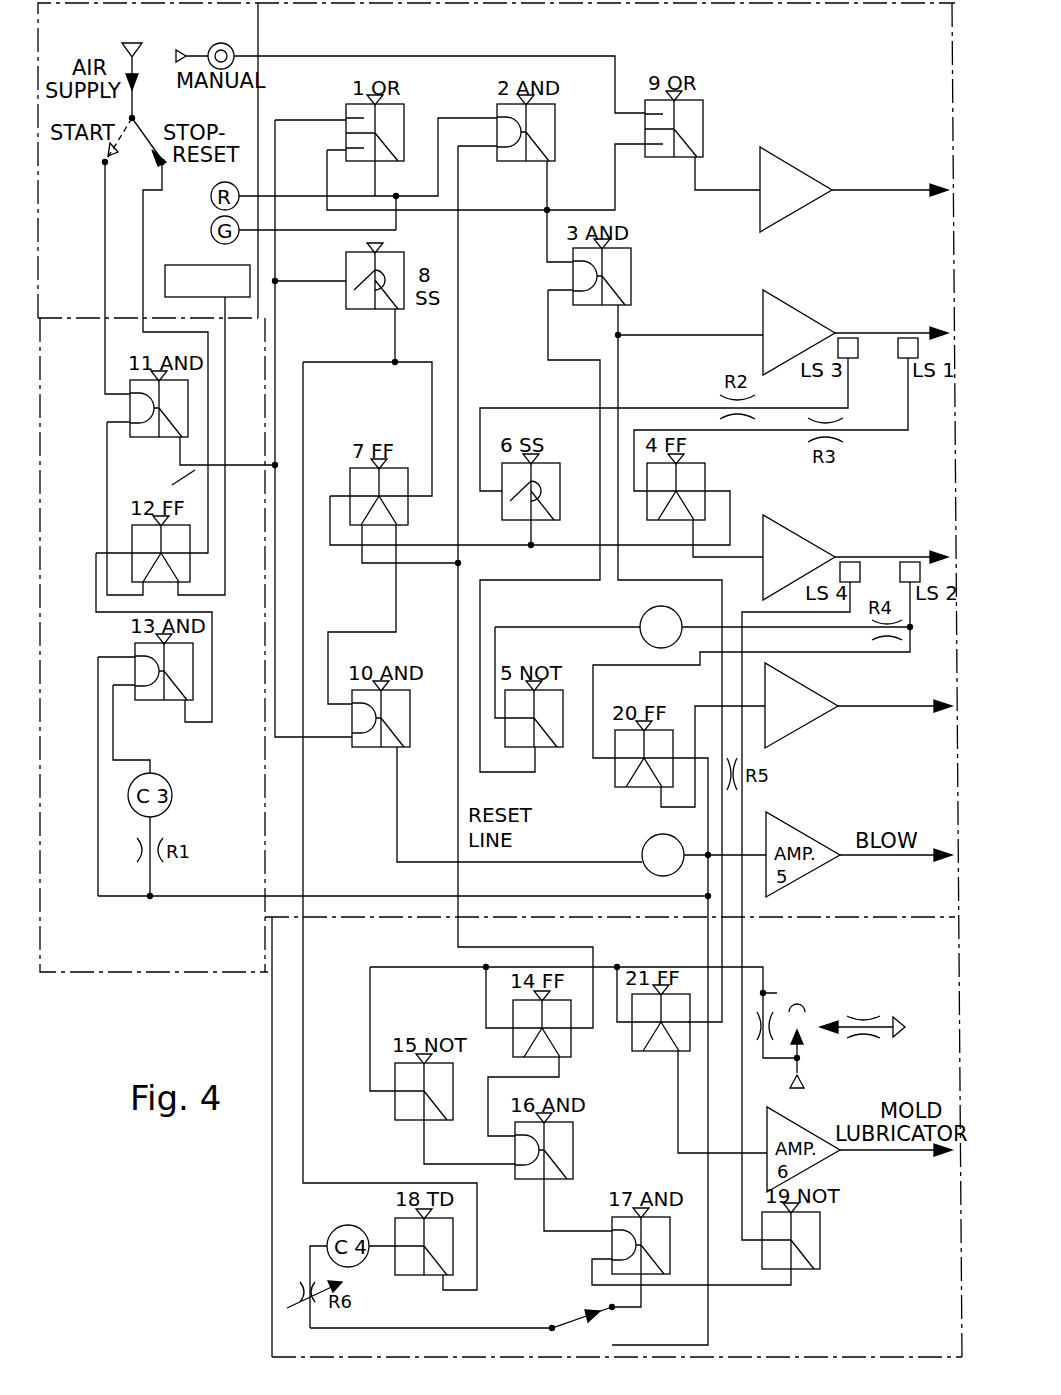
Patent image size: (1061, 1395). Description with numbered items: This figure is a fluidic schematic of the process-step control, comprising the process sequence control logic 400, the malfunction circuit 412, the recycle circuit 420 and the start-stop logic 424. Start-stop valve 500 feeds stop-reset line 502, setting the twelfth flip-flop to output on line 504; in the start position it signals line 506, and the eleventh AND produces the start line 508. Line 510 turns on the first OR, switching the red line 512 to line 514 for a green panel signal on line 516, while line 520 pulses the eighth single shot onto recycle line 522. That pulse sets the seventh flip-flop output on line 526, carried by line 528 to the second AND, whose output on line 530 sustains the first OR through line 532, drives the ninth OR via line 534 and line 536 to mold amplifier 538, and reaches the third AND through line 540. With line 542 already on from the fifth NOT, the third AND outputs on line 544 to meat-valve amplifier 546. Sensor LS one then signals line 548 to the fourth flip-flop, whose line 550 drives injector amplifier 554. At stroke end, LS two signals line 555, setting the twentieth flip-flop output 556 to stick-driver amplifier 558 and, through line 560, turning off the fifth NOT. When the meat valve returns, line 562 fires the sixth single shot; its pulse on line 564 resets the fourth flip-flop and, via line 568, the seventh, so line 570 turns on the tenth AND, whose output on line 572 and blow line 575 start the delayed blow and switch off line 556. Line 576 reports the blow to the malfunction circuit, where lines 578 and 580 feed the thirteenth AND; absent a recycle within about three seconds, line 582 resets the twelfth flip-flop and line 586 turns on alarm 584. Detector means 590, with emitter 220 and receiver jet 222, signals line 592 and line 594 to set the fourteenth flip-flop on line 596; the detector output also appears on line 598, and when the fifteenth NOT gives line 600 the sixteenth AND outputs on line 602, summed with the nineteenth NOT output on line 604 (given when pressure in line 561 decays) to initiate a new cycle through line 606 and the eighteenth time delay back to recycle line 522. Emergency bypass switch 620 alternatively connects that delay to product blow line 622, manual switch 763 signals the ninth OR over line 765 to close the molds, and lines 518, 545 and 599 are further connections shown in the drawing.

The process sequence control logic 400 is at (831, 34).
The malfunction circuit 412 is at (96, 974).
The recycle circuit 420 is at (861, 1356).
The start stop logic 424 is at (84, 51).
The start stop valve 500 is at (126, 116).
The stop reset line 502 is at (144, 198).
The line 504 is at (107, 542).
The line 506 is at (104, 192).
The start line 508 is at (250, 456).
The line 510 is at (315, 118).
The line 512 is at (280, 193).
The line 514 is at (398, 194).
The line 516 is at (320, 233).
The line 518 is at (474, 117).
The line 520 is at (316, 284).
The recycle line 522 is at (308, 433).
The line 526 is at (437, 565).
The line 528 is at (462, 282).
The line 530 is at (552, 208).
The line 532 is at (470, 210).
The line 534 is at (617, 209).
The line 536 is at (718, 188).
The amplifier 538 is at (798, 166).
The line 540 is at (547, 236).
The line 542 is at (547, 326).
The line 544 is at (680, 325).
The line 545 is at (708, 942).
The amplifier 546 is at (800, 303).
The line 548 is at (870, 429).
The line 550 is at (695, 549).
The amplifier 554 is at (790, 536).
The line 555 is at (633, 665).
The line 556 is at (700, 705).
The amplifier 558 is at (825, 716).
The line 560 is at (595, 627).
The line 561 is at (795, 653).
The line 562 is at (530, 408).
The line 564 is at (535, 548).
The line 568 is at (340, 551).
The line 570 is at (395, 589).
The line 572 is at (397, 816).
The line 575 is at (684, 843).
The line 576 is at (198, 895).
The line 578 is at (115, 718).
The line 580 is at (97, 670).
The line 582 is at (213, 672).
The alarm 584 is at (191, 265).
The line 586 is at (230, 595).
The dispensed product detector means 590 is at (880, 1008).
The line 592 is at (778, 999).
The line 594 is at (645, 966).
The line 596 is at (567, 1076).
The line 598 is at (368, 1040).
The line 599 is at (678, 1093).
The line 600 is at (424, 1136).
The line 602 is at (544, 1206).
The line 604 is at (793, 1283).
The line 606 is at (643, 1296).
The emergency bypass switch 620 is at (585, 1318).
The product blow line 622 is at (708, 1168).
The fluidic switch 763 is at (212, 50).
The line 765 is at (392, 52).
The emittor 220 is at (865, 1037).
The receiver jet 222 is at (805, 1059).